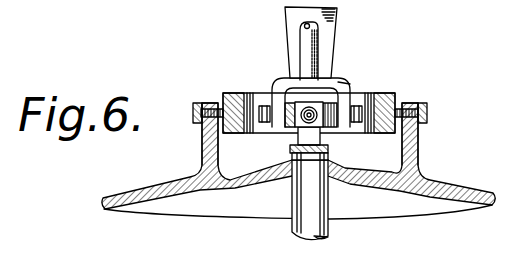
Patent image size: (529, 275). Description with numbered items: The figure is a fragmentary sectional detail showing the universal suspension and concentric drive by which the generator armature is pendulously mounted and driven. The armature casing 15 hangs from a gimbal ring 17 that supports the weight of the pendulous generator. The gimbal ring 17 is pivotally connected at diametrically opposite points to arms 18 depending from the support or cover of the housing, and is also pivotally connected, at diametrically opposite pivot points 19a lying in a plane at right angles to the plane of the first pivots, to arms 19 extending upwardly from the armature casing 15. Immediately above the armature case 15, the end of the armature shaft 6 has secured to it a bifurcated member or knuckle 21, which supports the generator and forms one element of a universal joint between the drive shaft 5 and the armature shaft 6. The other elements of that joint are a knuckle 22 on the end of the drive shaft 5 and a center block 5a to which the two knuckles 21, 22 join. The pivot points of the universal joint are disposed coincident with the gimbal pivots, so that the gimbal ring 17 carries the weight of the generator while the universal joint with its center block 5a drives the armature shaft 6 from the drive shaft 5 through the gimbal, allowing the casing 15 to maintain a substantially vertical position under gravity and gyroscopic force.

The drive shaft 5 is at (313, 45).
The center block 5a is at (288, 80).
The armature shaft 6 is at (300, 222).
The armature casing 15 is at (180, 208).
The gimbal ring 17 is at (388, 93).
The arms 18 is at (291, 21).
The arms 19 is at (205, 151).
The pivot points 19a is at (191, 113).
The bifurcated member or knuckle 21 is at (303, 142).
The knuckle 22 is at (339, 83).